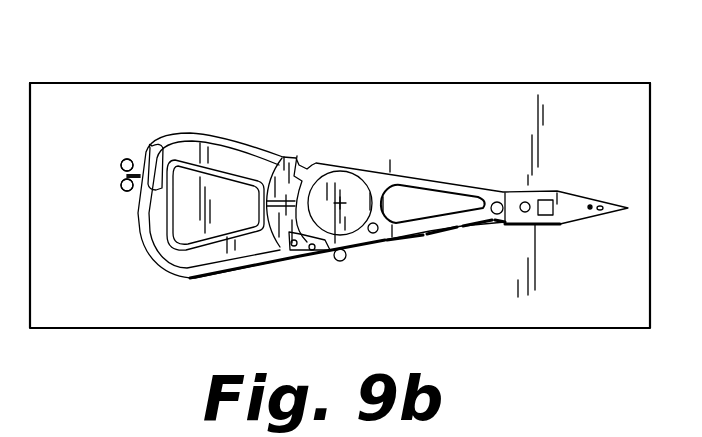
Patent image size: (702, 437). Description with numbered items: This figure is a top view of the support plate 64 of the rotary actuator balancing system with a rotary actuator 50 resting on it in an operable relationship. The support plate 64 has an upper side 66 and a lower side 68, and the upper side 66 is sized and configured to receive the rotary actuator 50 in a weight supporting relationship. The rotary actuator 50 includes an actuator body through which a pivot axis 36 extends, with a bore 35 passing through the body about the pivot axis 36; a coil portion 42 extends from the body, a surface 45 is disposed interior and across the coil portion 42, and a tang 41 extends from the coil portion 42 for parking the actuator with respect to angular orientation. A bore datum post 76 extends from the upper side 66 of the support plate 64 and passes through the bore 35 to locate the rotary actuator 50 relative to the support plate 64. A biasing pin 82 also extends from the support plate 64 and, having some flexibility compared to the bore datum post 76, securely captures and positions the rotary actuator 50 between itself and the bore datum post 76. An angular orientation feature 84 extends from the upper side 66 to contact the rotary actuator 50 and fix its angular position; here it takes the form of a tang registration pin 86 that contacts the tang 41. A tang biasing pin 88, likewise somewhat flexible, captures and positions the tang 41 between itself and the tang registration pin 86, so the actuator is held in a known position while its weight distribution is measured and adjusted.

The lower side 68 is at (101, 76).
The support plate 64 is at (188, 82).
The upper side 66 is at (236, 107).
The rotary actuator 50 is at (229, 140).
The coil portion 42 is at (182, 148).
The surface 45 is at (195, 222).
The bore 35 is at (366, 190).
The bore datum post 76 is at (341, 186).
The pivot axis 36 is at (340, 203).
The biasing pin 82 is at (347, 257).
The tang 41 is at (126, 176).
The tang registration pin 86 is at (127, 161).
The angular orientation feature 84 is at (125, 173).
The tang biasing pin 88 is at (127, 192).